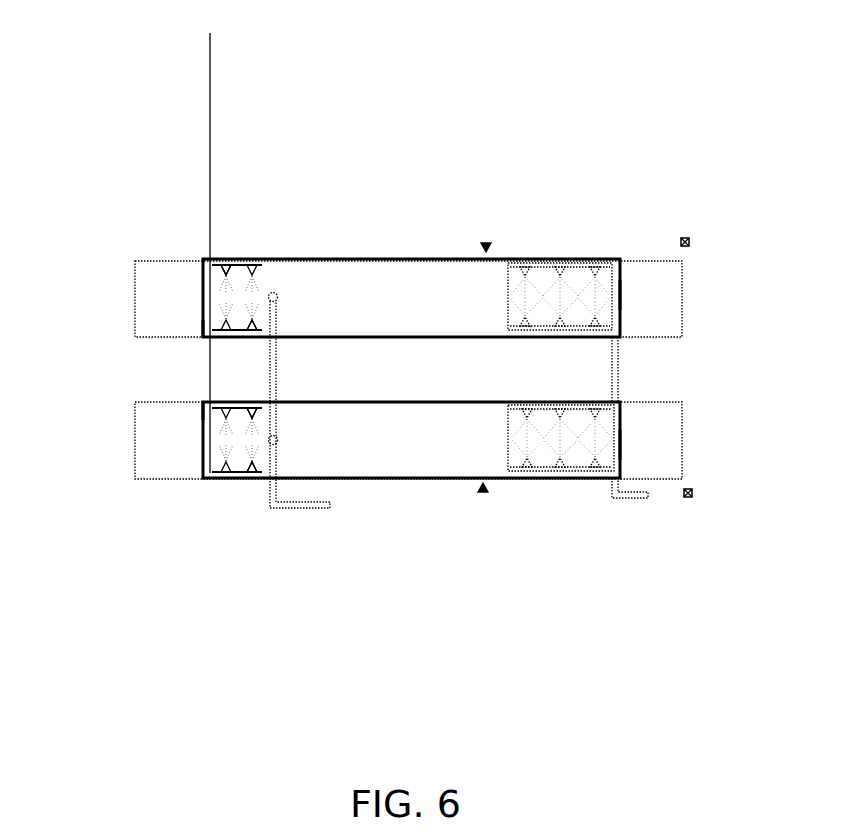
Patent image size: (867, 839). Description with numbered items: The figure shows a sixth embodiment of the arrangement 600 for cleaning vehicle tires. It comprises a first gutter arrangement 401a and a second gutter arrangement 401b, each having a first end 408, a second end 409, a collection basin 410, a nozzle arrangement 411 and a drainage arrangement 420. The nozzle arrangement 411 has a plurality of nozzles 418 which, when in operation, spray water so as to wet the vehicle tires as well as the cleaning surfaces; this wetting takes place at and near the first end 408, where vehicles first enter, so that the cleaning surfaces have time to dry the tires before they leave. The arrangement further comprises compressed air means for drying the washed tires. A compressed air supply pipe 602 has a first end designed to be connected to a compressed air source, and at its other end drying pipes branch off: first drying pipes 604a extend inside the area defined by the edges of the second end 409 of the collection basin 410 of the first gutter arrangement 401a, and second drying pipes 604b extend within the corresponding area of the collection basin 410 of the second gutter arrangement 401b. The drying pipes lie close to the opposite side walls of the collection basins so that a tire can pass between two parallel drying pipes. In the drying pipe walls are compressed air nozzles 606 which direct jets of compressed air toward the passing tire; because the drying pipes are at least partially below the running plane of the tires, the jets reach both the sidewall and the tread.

The arrangement 600 is at (80, 36).
The compressed air supply pipe 602 is at (209, 90).
The second end of the gutter arrangement 409 is at (202, 295).
The second drying pipes 604b is at (238, 330).
The first drying pipes 604a is at (245, 409).
The collection basin 410 is at (393, 297).
The second gutter arrangement 401b is at (487, 245).
The first gutter arrangement 401a is at (484, 492).
The nozzles 418 is at (566, 268).
The first end of the gutter arrangement 408 is at (622, 293).
The nozzle arrangement 411 is at (618, 367).
The compressed air nozzles 606 is at (210, 335).
The drainage arrangement 420 is at (292, 507).